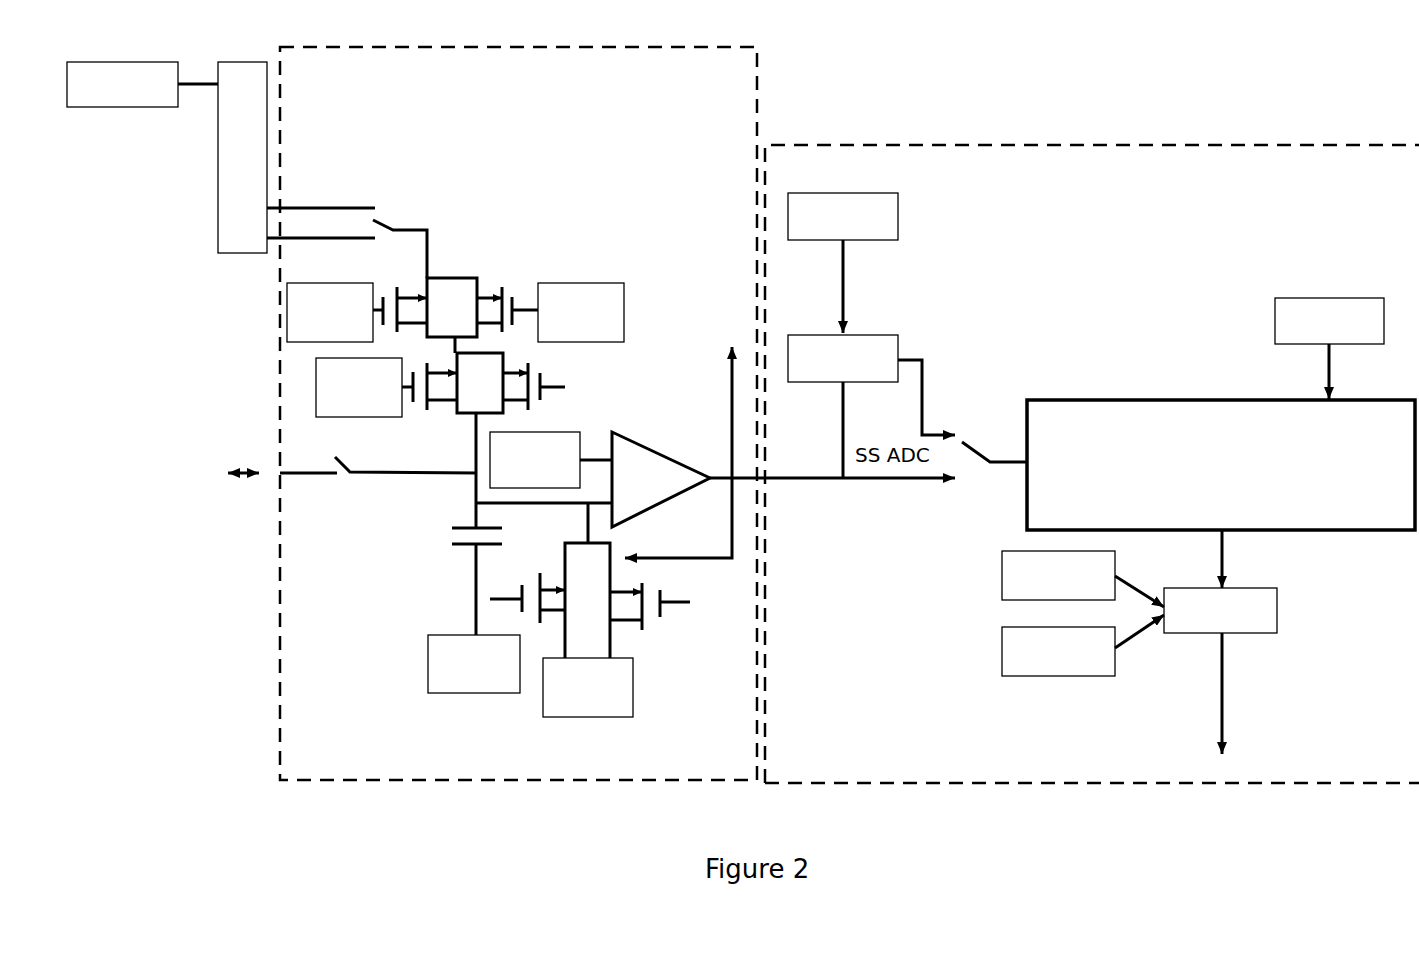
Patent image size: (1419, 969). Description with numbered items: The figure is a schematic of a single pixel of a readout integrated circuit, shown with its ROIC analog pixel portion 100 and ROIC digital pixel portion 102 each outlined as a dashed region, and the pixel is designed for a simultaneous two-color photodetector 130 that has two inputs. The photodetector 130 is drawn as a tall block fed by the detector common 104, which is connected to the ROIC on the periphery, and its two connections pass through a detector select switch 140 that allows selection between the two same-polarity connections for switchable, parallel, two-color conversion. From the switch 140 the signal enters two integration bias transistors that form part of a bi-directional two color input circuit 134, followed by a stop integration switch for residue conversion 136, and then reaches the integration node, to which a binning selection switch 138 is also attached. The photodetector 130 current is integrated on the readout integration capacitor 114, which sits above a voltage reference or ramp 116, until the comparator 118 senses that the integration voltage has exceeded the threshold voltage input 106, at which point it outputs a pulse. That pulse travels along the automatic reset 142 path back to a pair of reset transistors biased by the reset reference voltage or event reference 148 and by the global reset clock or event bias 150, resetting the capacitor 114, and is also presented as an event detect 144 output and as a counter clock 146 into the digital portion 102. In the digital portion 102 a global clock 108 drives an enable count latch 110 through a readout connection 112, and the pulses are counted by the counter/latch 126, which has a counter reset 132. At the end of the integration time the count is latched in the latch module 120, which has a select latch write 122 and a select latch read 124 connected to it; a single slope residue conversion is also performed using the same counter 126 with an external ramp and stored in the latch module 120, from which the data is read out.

The ROIC analog pixel portion 100 is at (445, 783).
The ROIC digital pixel portion 102 is at (960, 144).
The detector common 104 is at (142, 84).
The threshold voltage input 106 is at (551, 460).
The global clock 108 is at (843, 216).
The enable count latch 110 is at (907, 406).
The readout connection 112 is at (847, 303).
The readout integration capacitor 114 is at (450, 540).
The voltage reference or ramp 116 is at (474, 664).
The comparator 118 is at (682, 463).
The latch module 120 is at (1220, 671).
The select latch write 122 is at (1083, 579).
The select latch read 124 is at (1083, 645).
The counter/latch 126 is at (1221, 494).
The photodetector 130 is at (247, 254).
The counter reset 132 is at (1329, 348).
The integration bias transistors of bi-directional two color input circuit 134 is at (455, 315).
The stop integration switch for residue conversion 136 is at (440, 440).
The binning selection switch 138 is at (345, 484).
The detector select switch 140 is at (385, 222).
The automatic reset 142 is at (698, 563).
The event detect 144 is at (732, 340).
The counter clock 146 is at (878, 482).
The reset reference voltage / ADC conversion reference / event reference 148 is at (575, 610).
The global reset clock / event bias 150 is at (690, 612).